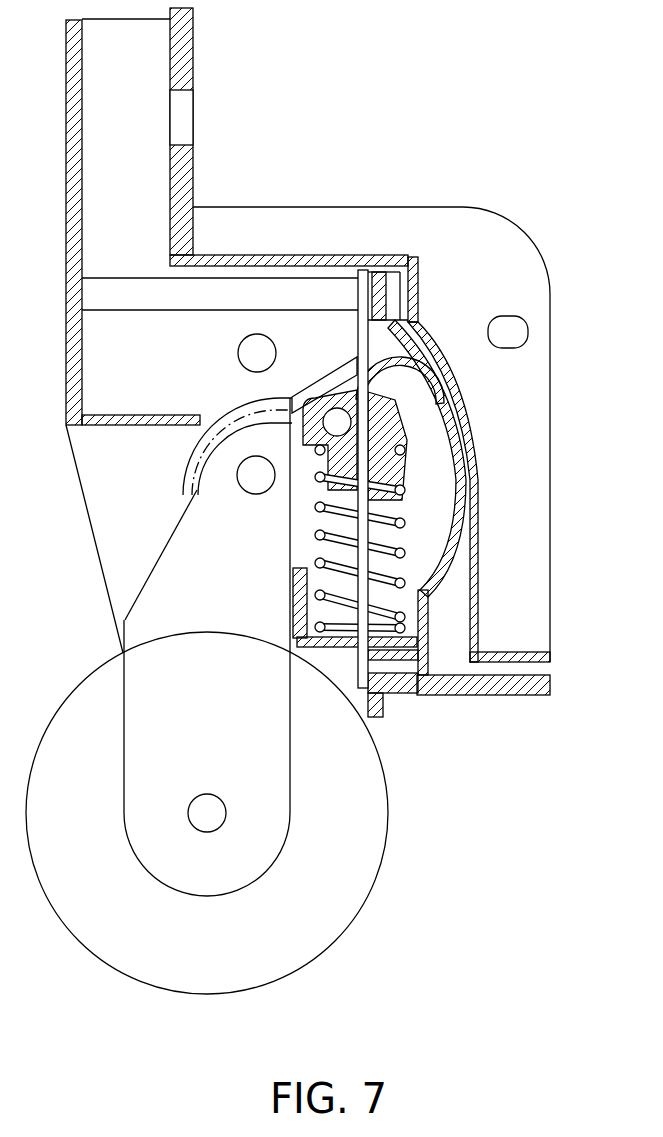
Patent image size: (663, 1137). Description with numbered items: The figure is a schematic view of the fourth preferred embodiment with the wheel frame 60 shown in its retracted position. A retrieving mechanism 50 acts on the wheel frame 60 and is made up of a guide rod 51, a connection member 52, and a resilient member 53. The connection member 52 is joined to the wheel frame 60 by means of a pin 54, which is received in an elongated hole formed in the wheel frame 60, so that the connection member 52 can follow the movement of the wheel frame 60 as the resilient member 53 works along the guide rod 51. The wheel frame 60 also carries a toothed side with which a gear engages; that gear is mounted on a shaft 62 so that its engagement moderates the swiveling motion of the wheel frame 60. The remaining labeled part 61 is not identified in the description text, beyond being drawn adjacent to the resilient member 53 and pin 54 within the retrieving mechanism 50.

The retrieving mechanism 50 is at (412, 467).
The guide rod 51 is at (362, 270).
The connection member 52 is at (387, 423).
The resilient member 53 is at (400, 508).
The pin 54 is at (337, 408).
The wheel frame 60 is at (180, 535).
The spring seat block 61 is at (310, 426).
The shaft 62 is at (257, 334).